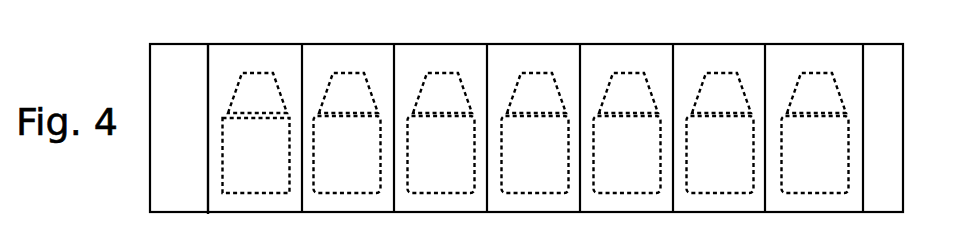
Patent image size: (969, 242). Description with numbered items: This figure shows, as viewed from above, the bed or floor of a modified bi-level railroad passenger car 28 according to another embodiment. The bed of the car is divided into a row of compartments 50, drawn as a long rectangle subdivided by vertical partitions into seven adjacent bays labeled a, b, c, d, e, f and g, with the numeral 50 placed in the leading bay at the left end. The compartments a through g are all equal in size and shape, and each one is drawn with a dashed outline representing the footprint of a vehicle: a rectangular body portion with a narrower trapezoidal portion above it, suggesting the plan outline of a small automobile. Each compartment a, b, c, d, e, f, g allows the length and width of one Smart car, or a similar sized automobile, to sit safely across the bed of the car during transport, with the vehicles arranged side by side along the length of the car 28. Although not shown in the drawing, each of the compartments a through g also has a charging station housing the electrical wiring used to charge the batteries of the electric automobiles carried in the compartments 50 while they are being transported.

The row of key positions / display bar 28 is at (546, 30).
The compartments 50 is at (185, 129).
The compartment a is at (256, 133).
The compartment b is at (347, 133).
The compartment c is at (441, 133).
The compartment d is at (535, 133).
The compartment e is at (627, 133).
The compartment f is at (720, 133).
The compartment g is at (815, 133).